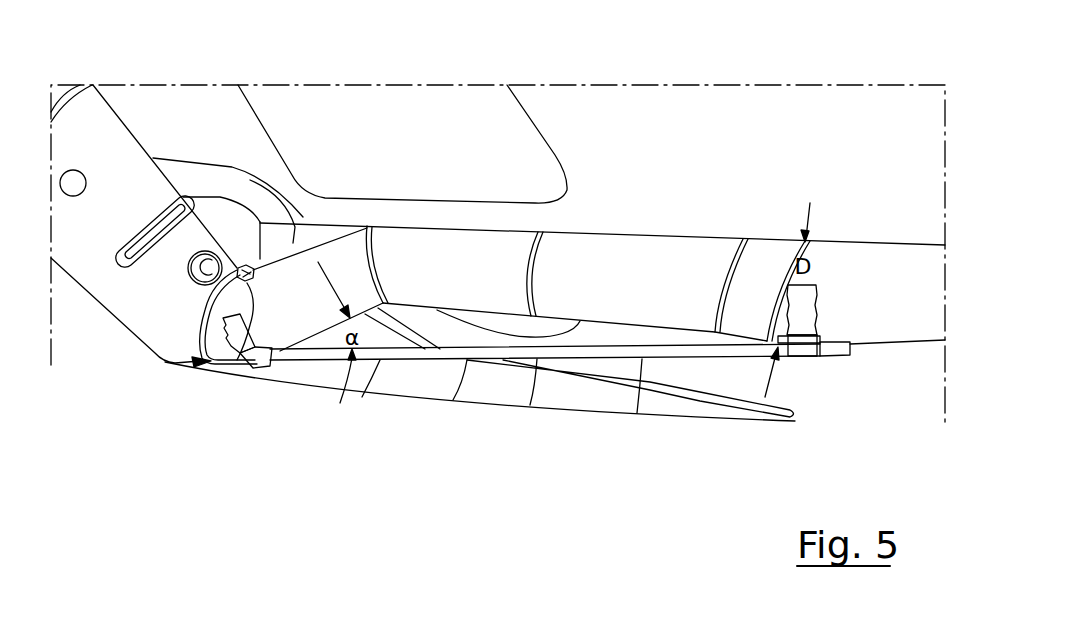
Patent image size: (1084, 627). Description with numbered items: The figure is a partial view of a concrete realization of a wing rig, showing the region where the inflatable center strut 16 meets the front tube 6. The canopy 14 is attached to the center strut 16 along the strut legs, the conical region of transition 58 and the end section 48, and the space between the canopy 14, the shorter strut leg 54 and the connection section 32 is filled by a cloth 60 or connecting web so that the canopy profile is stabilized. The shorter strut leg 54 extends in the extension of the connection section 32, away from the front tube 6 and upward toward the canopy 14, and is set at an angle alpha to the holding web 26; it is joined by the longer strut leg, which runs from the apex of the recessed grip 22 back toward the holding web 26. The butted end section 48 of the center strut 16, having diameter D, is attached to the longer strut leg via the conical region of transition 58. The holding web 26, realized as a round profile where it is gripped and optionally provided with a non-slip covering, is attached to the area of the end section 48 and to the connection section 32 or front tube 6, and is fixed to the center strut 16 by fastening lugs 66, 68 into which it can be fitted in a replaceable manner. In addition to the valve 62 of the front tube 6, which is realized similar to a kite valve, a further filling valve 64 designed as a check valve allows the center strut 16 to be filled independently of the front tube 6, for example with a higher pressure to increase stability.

The front tube 6 is at (384, 383).
The canopy 14 is at (679, 215).
The center strut 16 is at (621, 252).
The recessed grip 22 is at (435, 340).
The holding web 26 is at (640, 388).
The connection section 32 is at (218, 345).
The end section 48 is at (889, 330).
The strut leg 54 is at (307, 293).
The conical region of transition 58 is at (743, 323).
The cloth 60 is at (232, 168).
The valve 62 is at (205, 287).
The filling valve 64 is at (245, 352).
The fastening lug 66 is at (253, 368).
The fastening lug 68 is at (800, 350).